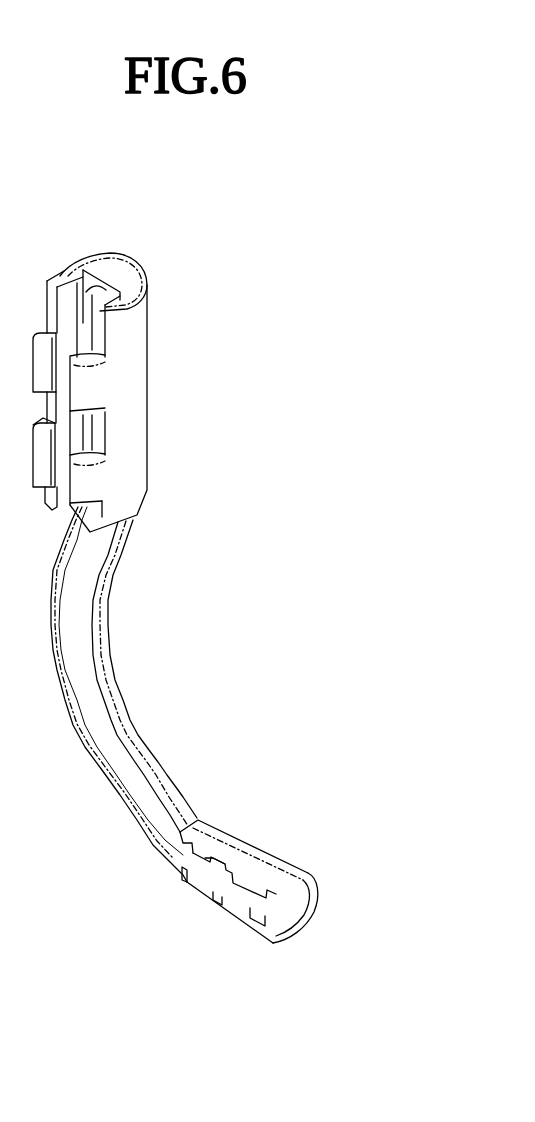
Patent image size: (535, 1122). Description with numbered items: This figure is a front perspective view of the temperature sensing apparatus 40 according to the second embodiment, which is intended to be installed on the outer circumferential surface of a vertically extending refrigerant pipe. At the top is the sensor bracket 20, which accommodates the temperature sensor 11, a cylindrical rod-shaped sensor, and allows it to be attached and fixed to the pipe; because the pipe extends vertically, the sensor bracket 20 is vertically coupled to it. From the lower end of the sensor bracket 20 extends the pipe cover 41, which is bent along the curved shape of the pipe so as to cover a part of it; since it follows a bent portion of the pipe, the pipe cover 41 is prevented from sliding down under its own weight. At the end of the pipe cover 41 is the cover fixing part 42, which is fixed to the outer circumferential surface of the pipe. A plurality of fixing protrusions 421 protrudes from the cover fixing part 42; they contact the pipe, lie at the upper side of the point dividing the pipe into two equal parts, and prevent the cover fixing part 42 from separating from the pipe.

The temperature sensor 11 is at (61, 285).
The sensor bracket 20 is at (140, 416).
The temperature sensing apparatus 40 is at (357, 578).
The pipe cover 41 is at (130, 724).
The cover fixing part 42 is at (232, 843).
The fixing protrusions 421 is at (253, 883).